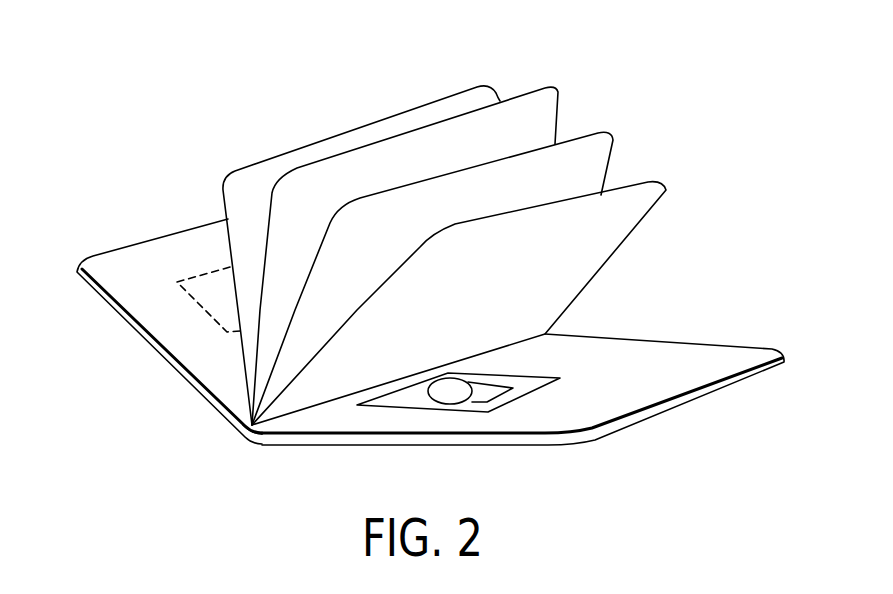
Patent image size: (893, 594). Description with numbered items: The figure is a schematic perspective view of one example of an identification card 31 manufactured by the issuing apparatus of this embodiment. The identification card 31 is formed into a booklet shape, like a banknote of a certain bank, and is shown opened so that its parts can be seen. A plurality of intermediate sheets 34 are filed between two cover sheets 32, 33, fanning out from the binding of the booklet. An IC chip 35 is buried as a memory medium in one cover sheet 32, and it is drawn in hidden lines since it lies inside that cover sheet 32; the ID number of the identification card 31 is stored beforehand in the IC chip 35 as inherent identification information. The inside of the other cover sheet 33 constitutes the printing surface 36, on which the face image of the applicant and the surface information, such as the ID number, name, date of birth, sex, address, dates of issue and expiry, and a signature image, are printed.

The identification card 31 is at (228, 423).
The cover sheet 32 is at (97, 255).
The cover sheet 33 is at (697, 393).
The intermediate sheets 34 is at (483, 86).
The IC chip 35 is at (181, 278).
The printing surface 36 is at (717, 360).